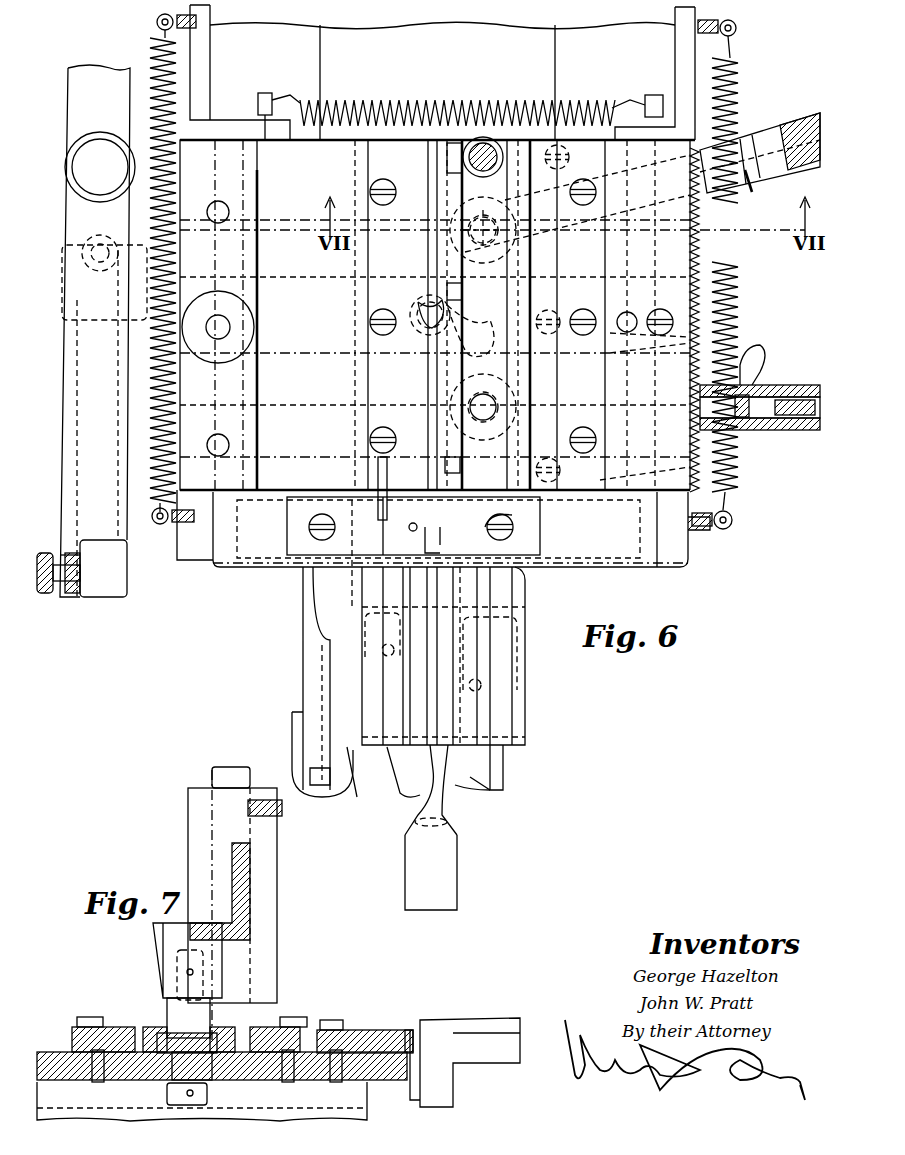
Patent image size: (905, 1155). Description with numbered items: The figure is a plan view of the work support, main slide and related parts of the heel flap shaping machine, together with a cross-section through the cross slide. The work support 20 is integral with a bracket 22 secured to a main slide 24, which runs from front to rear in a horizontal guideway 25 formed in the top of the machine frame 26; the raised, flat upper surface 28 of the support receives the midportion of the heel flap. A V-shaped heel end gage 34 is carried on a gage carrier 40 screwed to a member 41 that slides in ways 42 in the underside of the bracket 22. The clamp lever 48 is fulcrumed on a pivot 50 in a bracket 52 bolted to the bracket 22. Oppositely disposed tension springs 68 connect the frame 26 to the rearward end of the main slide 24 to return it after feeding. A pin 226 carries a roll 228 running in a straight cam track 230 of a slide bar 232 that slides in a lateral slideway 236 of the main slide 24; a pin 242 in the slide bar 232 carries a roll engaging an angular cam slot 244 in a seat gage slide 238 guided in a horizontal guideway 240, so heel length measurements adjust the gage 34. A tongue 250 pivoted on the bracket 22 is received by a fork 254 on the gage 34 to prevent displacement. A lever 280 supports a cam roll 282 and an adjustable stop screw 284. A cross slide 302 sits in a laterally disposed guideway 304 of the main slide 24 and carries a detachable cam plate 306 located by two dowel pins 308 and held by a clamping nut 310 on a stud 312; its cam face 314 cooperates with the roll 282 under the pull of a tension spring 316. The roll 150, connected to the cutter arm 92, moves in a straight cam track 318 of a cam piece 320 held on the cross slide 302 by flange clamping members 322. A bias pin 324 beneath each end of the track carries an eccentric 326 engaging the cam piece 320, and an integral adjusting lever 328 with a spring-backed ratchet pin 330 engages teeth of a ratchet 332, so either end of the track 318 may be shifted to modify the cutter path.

In FIG. 6, the work support 20 is at (452, 832).
In FIG. 6, the bracket 22 is at (520, 665).
In FIG. 6, the main slide 24 is at (250, 570).
In FIG. 7, the main slide 24 is at (367, 1117).
In FIG. 6, the horizontal guideway 25 is at (245, 439).
In FIG. 6, the machine frame 26 is at (198, 564).
In FIG. 6, the upper surface 28 is at (445, 880).
In FIG. 6, the heel end gage 34 is at (505, 787).
In FIG. 6, the gage carrier 40 is at (345, 795).
In FIG. 6, the member 41 is at (400, 793).
In FIG. 6, the ways 42 is at (375, 650).
In FIG. 6, the lever 48 is at (420, 557).
In FIG. 6, the pivot 50 is at (508, 522).
In FIG. 6, the bracket 52 is at (287, 524).
In FIG. 6, the tension springs 68 is at (156, 70).
In FIG. 7, the arm 92 is at (278, 884).
In FIG. 6, the roll 150 is at (487, 140).
In FIG. 7, the roll 150 is at (165, 1005).
In FIG. 6, the pin 226 is at (100, 267).
In FIG. 6, the roll 228 is at (85, 247).
In FIG. 6, the cam track 230 is at (78, 532).
In FIG. 6, the slide bar 232 is at (296, 375).
In FIG. 6, the lateral slideway 236 is at (298, 270).
In FIG. 6, the seat gage slide 238 is at (355, 468).
In FIG. 6, the horizontal guideway 240 is at (357, 324).
In FIG. 6, the pin 242 is at (425, 297).
In FIG. 6, the cam slot 244 is at (463, 299).
In FIG. 6, the tongue 250 is at (303, 657).
In FIG. 6, the fork 254 is at (292, 722).
In FIG. 6, the lever 280 is at (82, 68).
In FIG. 6, the cam roll 282 is at (66, 164).
In FIG. 6, the adjustable stop screw 284 is at (48, 600).
In FIG. 6, the cross slide 302 is at (338, 140).
In FIG. 7, the cross slide 302 is at (50, 1057).
In FIG. 6, the guideway 304 is at (300, 230).
In FIG. 6, the cam plate 306 is at (262, 185).
In FIG. 6, the dowel pins 308 is at (208, 208).
In FIG. 6, the clamping nut 310 is at (252, 310).
In FIG. 6, the stud 312 is at (232, 330).
In FIG. 6, the cam face 314 is at (125, 307).
In FIG. 6, the tension spring 316 is at (385, 100).
In FIG. 6, the cam track 318 is at (450, 180).
In FIG. 7, the cam track 318 is at (155, 1029).
In FIG. 6, the cam piece 320 is at (437, 156).
In FIG. 7, the cam piece 320 is at (240, 1032).
In FIG. 6, the flange clamping members 322 is at (368, 292).
In FIG. 7, the flange clamping members 322 is at (75, 1029).
In FIG. 6, the bias pin 324 is at (478, 254).
In FIG. 7, the bias pin 324 is at (212, 1070).
In FIG. 6, the eccentric 326 is at (452, 217).
In FIG. 7, the eccentric 326 is at (178, 1060).
In FIG. 6, the adjusting lever 328 is at (772, 127).
In FIG. 7, the adjusting lever 328 is at (453, 1082).
In FIG. 6, the ratchet pin 330 is at (750, 182).
In FIG. 7, the ratchet pin 330 is at (413, 1030).
In FIG. 6, the ratchet 332 is at (705, 292).
In FIG. 7, the ratchet 332 is at (380, 1032).